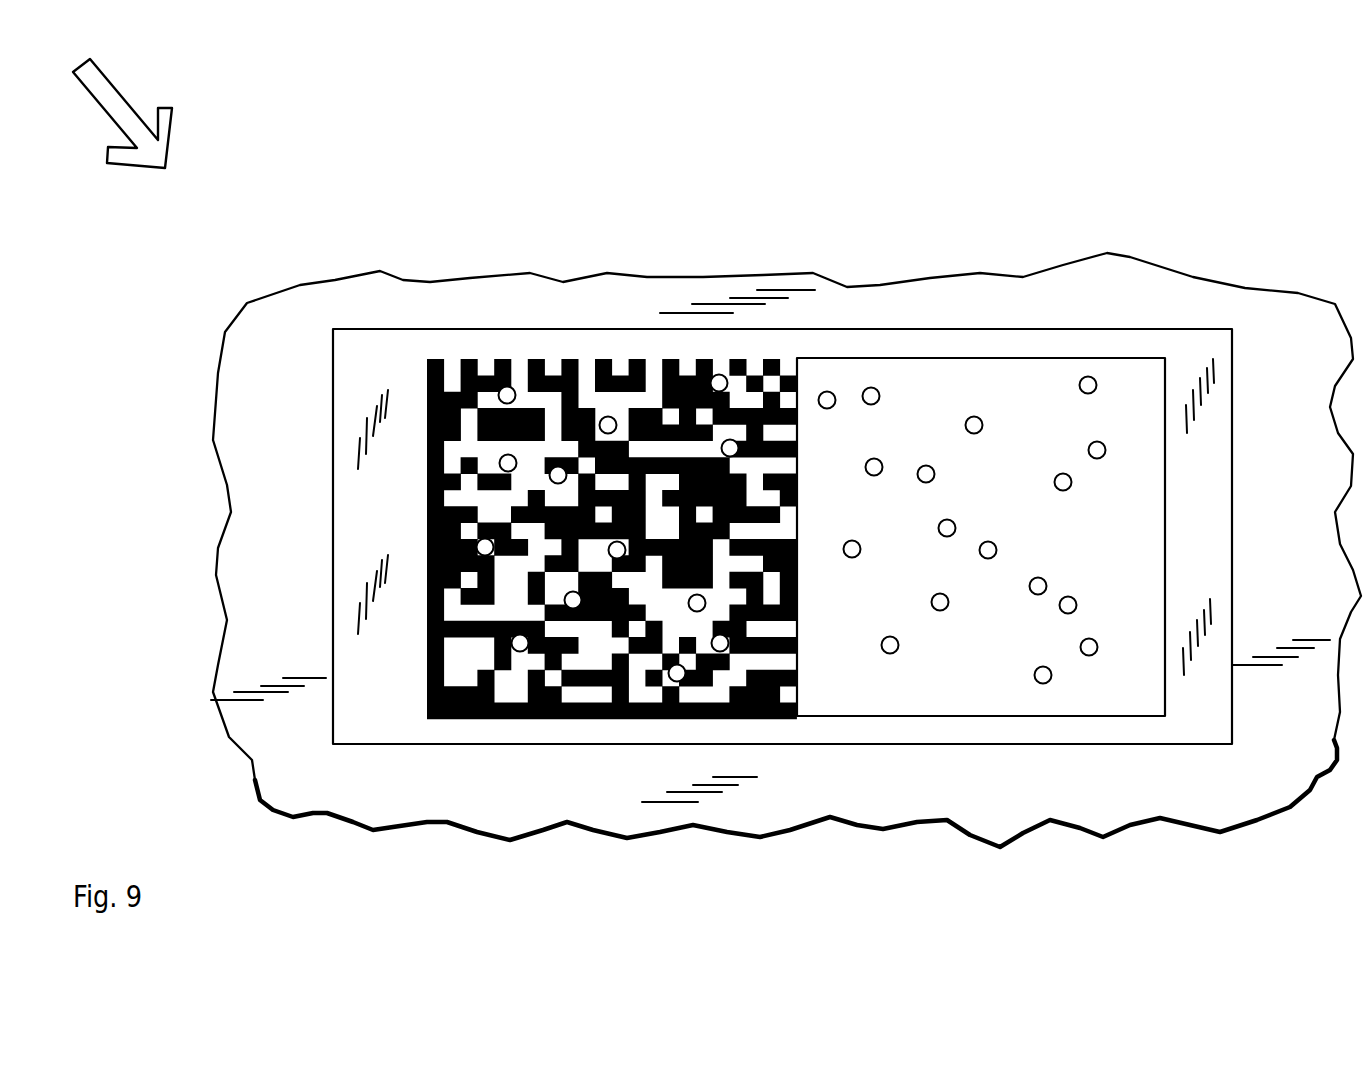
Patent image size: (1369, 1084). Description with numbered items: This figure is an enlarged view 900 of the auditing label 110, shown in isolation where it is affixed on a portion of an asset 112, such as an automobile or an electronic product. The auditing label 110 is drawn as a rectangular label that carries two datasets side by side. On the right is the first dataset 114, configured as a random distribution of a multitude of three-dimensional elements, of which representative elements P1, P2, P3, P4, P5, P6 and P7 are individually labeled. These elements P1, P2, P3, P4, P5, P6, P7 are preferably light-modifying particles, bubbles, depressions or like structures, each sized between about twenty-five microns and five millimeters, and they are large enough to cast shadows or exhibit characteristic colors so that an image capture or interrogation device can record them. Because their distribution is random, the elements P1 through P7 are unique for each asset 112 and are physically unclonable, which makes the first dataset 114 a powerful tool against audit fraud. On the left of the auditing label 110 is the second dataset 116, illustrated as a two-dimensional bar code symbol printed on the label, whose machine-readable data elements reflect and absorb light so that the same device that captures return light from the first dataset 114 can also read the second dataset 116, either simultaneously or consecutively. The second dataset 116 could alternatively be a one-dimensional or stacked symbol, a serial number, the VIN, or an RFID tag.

The view of tag arrangement 900 is at (160, 115).
The auditing label 110 is at (333, 409).
The asset 112 is at (270, 546).
The first dataset 114 is at (993, 411).
The second dataset 116 is at (617, 364).
The three-dimensional element P1 is at (829, 410).
The three-dimensional element P2 is at (855, 558).
The three-dimensional element P3 is at (940, 593).
The three-dimensional element P4 is at (990, 560).
The three-dimensional element P5 is at (1040, 577).
The three-dimensional element P6 is at (1072, 597).
The three-dimensional element P7 is at (1090, 638).